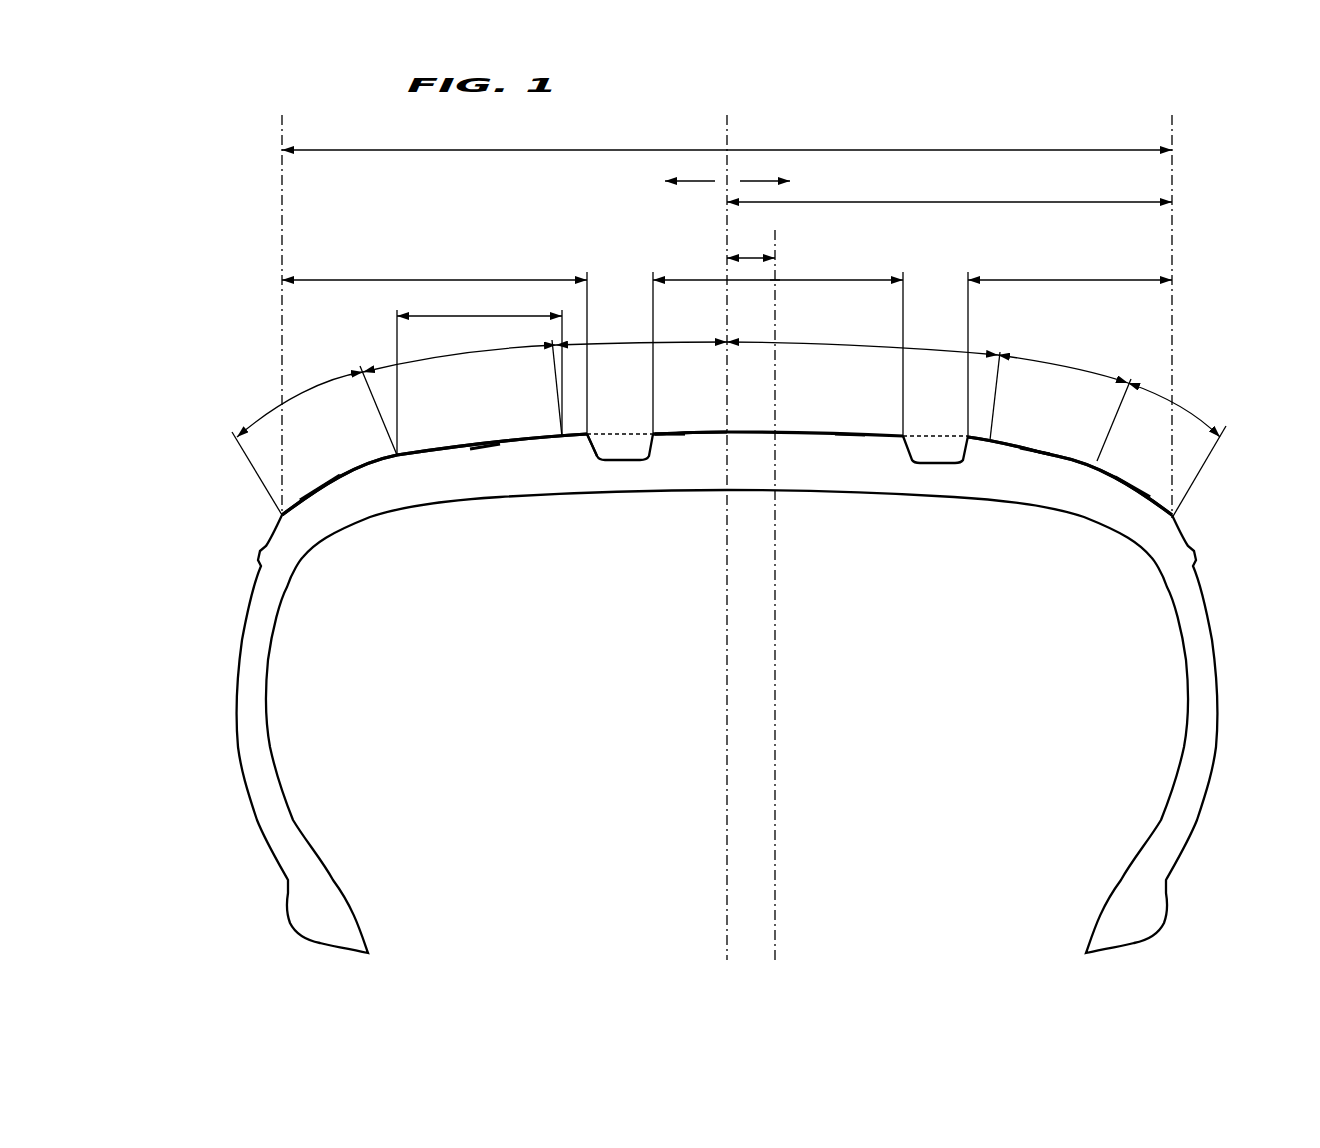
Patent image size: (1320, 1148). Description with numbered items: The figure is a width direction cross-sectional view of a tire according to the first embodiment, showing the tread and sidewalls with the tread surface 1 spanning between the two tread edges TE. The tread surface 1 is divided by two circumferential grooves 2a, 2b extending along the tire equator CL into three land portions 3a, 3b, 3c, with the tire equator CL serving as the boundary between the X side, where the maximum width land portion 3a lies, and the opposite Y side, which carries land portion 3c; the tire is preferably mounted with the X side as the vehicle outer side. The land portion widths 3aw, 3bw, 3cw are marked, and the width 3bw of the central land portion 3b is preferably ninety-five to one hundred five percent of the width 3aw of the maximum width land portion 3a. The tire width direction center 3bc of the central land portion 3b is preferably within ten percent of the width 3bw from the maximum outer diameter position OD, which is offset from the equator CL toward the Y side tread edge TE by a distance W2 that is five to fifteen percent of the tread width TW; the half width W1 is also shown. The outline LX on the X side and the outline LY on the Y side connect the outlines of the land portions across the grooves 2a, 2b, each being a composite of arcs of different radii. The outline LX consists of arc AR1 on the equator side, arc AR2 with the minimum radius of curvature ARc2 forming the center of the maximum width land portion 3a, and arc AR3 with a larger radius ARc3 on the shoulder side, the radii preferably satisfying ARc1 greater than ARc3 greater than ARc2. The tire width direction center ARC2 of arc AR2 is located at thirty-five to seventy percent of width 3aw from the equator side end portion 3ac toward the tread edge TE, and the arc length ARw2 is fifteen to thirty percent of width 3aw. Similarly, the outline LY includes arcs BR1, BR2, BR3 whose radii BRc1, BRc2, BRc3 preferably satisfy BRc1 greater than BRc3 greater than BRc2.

The tread surface 1 is at (250, 313).
The circumferential groove 2a is at (630, 455).
The circumferential groove 2b is at (933, 458).
The maximum width land portion 3a is at (425, 452).
The central land portion 3b is at (697, 433).
The land portion 3c is at (1020, 447).
The tire equator side end portion of the maximum width land portion 3ac is at (587, 446).
The tire width direction center of the central land portion 3bc is at (775, 280).
The land portion width of the maximum width land portion 3aw is at (434, 345).
The land portion width of the central land portion 3bw is at (778, 346).
The land portion width of land portion 3c 3cw is at (1070, 346).
The tread edge TE is at (729, 307).
The tire equator CL is at (727, 528).
The maximum outer diameter position OD is at (773, 583).
The tread width TW is at (727, 136).
The tire width direction distance W1 is at (949, 188).
The tire width direction distance from the equator to the maximum outer diameter pos W2 is at (751, 243).
The X side X is at (681, 181).
The Y side Y is at (773, 181).
The arc AR1 is at (641, 329).
The arc AR2 is at (459, 349).
The arc AR3 is at (317, 409).
The tread width direction length of arc AR2 ARw2 is at (479, 371).
The tire width direction center of arc AR2 ARC2 is at (478, 317).
The radius of curvature of arc AR1 ARc1 is at (668, 434).
The radius of curvature of arc AR2 ARc2 is at (483, 447).
The radius of curvature of arc AR3 ARc3 is at (320, 487).
The arc BR1 is at (863, 378).
The arc BR2 is at (1064, 400).
The arc BR3 is at (1174, 410).
The radius of curvature of arc BR1 BRc1 is at (848, 436).
The radius of curvature of arc BR2 BRc2 is at (1037, 455).
The radius of curvature of arc BR3 BRc3 is at (1132, 490).
The outline LX is at (330, 472).
The outline LY is at (1108, 467).